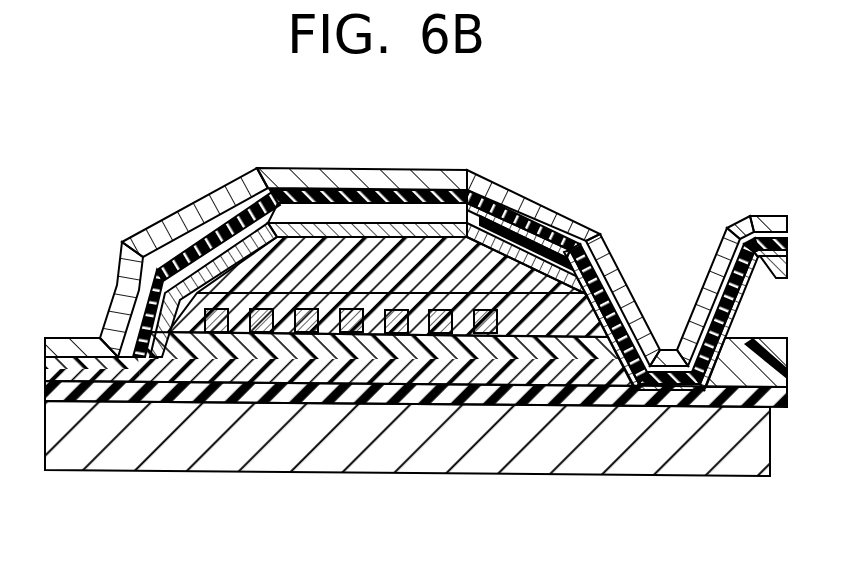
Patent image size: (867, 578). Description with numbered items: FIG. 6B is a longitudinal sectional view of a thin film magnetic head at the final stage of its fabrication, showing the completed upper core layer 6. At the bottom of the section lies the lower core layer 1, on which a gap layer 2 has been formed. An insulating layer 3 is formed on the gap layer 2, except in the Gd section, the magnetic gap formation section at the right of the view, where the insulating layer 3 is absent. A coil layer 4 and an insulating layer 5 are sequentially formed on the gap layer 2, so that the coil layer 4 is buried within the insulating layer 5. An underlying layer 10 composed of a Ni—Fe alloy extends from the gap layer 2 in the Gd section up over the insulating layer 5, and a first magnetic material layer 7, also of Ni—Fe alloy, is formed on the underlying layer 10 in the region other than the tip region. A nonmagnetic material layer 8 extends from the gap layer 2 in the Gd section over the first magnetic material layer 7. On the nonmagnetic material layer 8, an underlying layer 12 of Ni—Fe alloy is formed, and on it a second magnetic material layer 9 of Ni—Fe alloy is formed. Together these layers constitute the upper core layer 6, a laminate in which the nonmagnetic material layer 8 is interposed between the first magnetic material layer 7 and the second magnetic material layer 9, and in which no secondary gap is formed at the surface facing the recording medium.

The lower core layer 1 is at (232, 448).
The gap layer 2 is at (481, 396).
The insulating layer 3 is at (344, 375).
The coil layer 4 is at (352, 305).
The insulating layer 5 is at (412, 262).
The upper core layer 6 is at (416, 241).
The first magnetic material layer 7 is at (482, 226).
The nonmagnetic material layer 8 is at (527, 232).
The second magnetic material layer 9 is at (579, 228).
The underlying layer 10 is at (604, 274).
The underlying layer 12 is at (318, 190).